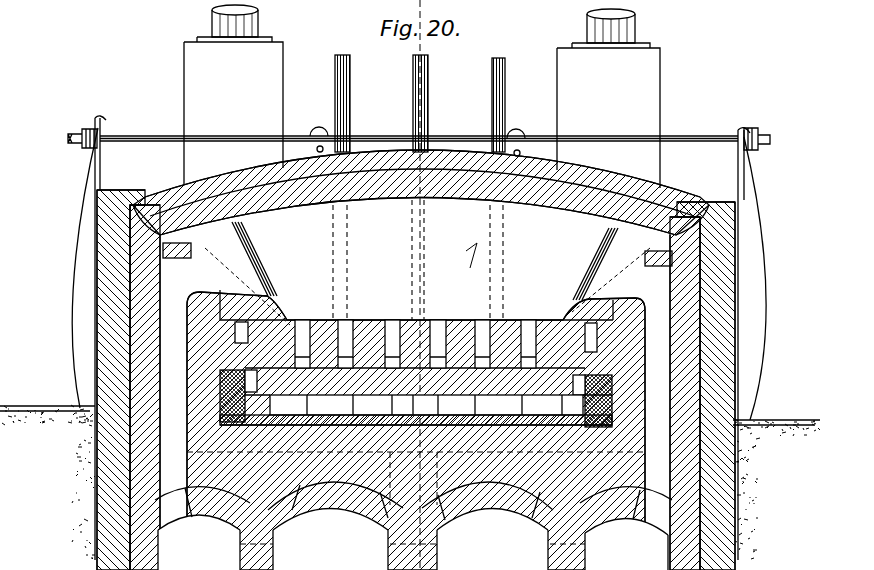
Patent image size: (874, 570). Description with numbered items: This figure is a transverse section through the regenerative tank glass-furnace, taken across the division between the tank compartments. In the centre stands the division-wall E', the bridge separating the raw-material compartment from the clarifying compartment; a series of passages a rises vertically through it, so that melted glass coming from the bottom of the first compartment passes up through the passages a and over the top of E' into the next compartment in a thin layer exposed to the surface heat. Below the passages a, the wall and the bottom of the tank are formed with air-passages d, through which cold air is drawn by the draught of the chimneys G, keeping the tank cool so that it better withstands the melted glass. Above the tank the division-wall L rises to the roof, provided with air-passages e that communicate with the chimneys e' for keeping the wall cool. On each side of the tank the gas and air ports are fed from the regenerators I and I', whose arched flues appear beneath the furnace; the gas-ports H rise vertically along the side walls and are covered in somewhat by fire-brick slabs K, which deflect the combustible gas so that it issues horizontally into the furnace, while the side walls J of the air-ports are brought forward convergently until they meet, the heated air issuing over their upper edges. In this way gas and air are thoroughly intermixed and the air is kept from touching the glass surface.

The chimney G is at (422, 96).
The chimney e' is at (428, 103).
The air-passage e is at (421, 260).
The division-wall L is at (416, 279).
The side wall J is at (427, 273).
The fire-brick slab K is at (417, 254).
The gas-port H is at (413, 421).
The division-wall part E' is at (416, 345).
The passage a is at (415, 344).
The air-passage d is at (416, 410).
The regenerator I is at (413, 528).
The regenerator I' is at (410, 526).